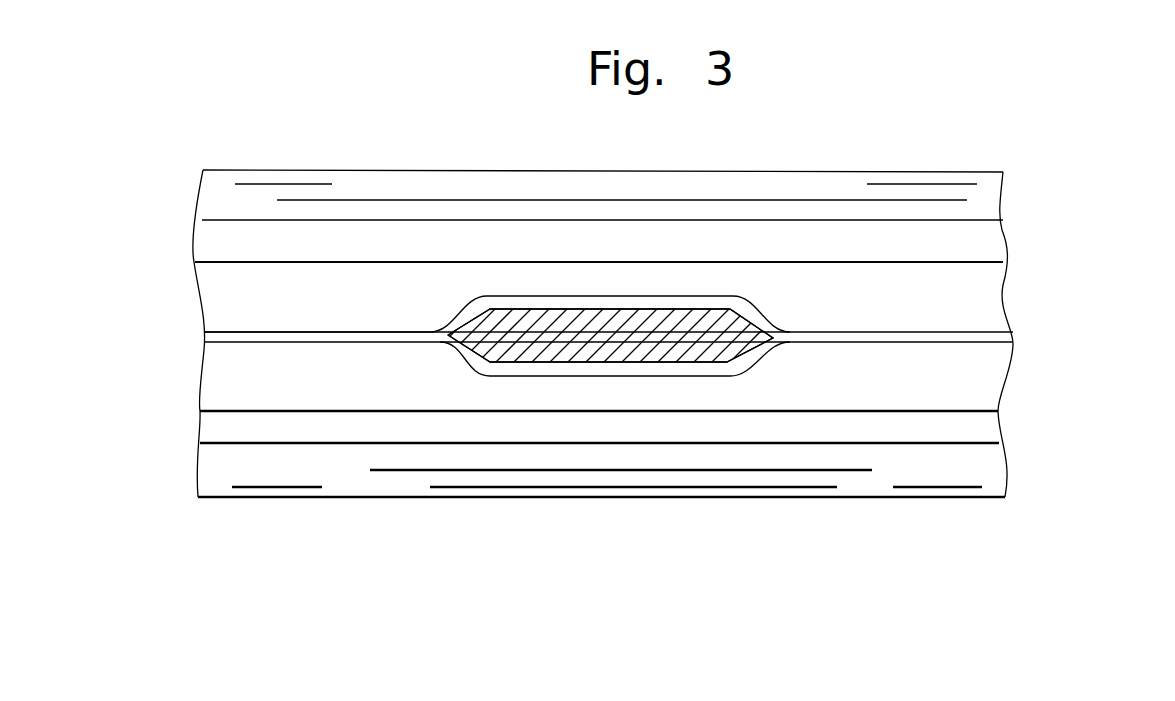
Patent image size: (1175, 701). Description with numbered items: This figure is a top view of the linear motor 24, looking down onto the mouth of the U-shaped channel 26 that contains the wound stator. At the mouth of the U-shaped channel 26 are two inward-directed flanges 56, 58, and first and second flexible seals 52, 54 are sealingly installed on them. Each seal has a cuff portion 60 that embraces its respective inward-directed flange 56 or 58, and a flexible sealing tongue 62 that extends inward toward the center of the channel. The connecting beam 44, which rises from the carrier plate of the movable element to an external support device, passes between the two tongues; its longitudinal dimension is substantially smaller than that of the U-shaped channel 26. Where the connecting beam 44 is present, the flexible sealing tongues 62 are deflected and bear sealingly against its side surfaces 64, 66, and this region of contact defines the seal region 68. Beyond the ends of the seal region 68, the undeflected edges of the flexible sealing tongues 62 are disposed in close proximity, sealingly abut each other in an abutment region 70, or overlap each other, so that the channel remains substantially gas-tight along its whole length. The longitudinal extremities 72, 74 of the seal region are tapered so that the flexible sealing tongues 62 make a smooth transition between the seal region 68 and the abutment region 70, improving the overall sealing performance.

The linear motor 24 is at (198, 104).
The U-shaped channel 26 is at (903, 171).
The connecting beam 44 is at (720, 327).
The first flexible seal 52 is at (978, 303).
The second flexible seal 54 is at (974, 370).
The inward-directed flange 56 is at (540, 208).
The inward-directed flange 58 is at (619, 457).
The cuff portion 60 is at (952, 248).
The flexible sealing tongue 62 is at (845, 278).
The side surface 64 is at (562, 318).
The side surface 66 is at (558, 363).
The seal region 68 is at (458, 376).
The abutment region 70 is at (250, 332).
The longitudinal extremity 72 is at (455, 328).
The longitudinal extremity 74 is at (745, 345).